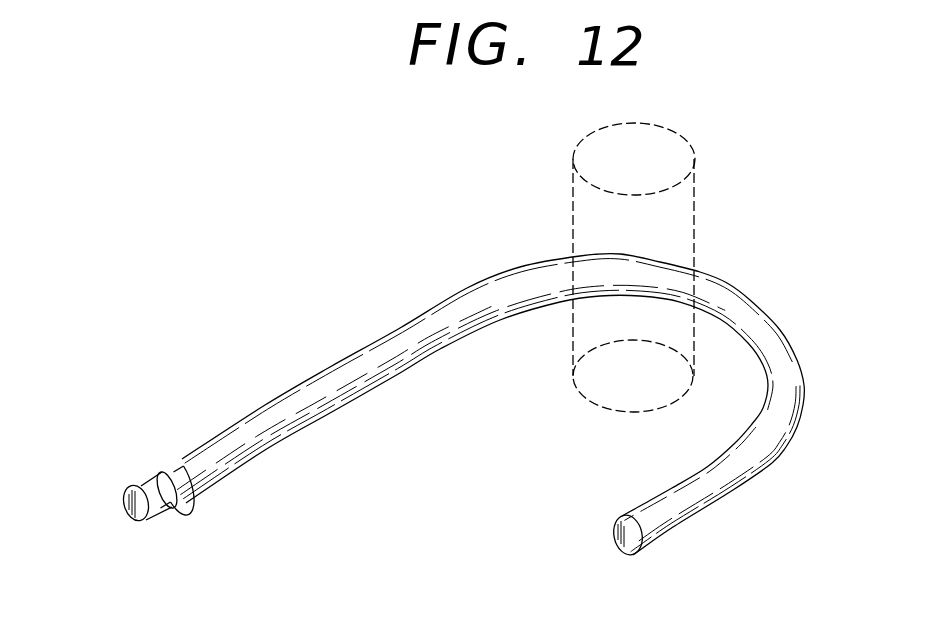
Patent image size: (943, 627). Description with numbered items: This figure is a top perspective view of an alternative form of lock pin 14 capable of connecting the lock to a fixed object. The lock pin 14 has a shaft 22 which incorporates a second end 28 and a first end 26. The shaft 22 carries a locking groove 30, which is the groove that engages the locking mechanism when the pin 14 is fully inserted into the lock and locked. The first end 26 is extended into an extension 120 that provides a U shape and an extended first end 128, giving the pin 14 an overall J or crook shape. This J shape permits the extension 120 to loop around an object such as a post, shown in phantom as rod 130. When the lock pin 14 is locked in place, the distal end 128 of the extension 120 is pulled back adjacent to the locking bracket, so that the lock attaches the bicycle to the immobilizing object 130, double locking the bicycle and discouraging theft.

The lock pin 14 is at (477, 430).
The shaft 22 is at (375, 348).
The first end 26 is at (474, 336).
The second end 28 is at (134, 481).
The locking groove 30 is at (165, 472).
The extension 120 is at (782, 340).
The extended first end 128 is at (655, 532).
The rod 130 is at (680, 225).